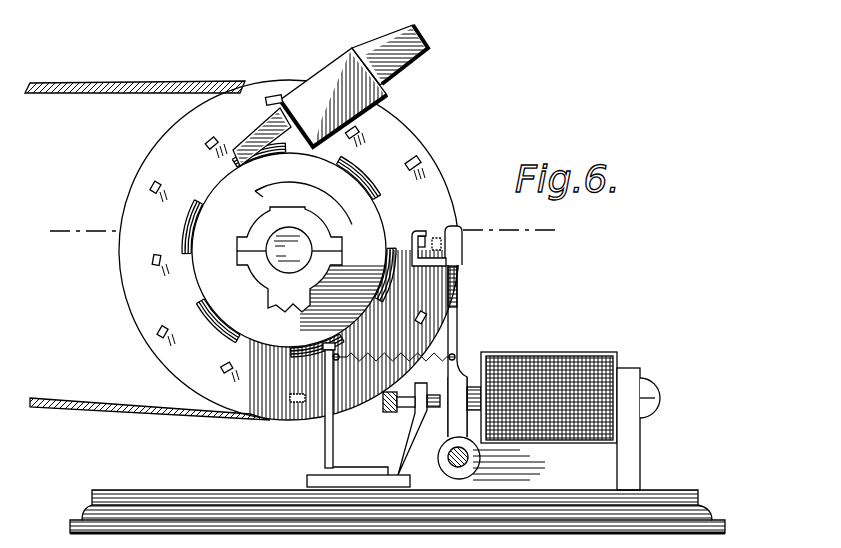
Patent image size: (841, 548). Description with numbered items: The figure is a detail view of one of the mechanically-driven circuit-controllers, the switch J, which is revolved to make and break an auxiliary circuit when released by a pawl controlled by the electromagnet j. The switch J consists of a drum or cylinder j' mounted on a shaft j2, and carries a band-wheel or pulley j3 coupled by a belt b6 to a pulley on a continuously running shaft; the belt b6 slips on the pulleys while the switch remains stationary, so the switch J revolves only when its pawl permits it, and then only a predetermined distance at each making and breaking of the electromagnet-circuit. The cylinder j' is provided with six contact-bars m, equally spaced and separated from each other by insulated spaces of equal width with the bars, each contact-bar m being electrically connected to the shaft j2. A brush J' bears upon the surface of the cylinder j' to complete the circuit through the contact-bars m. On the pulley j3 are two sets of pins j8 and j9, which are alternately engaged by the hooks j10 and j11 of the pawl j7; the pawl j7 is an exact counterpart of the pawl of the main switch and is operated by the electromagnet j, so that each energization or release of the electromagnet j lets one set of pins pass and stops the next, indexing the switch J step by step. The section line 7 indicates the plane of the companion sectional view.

The switch J is at (297, 82).
The brush J' is at (390, 49).
The belt b6 is at (147, 243).
The electromagnet j is at (563, 408).
The cylinder j' is at (289, 250).
The shaft j2 is at (289, 259).
The band-wheel j3 is at (151, 159).
The pawl j7 is at (460, 302).
The pins j8 is at (273, 96).
The pins j9 is at (488, 318).
The hook j10 is at (461, 230).
The hook j11 is at (438, 238).
The contact-bars m is at (281, 168).
The section line 7 is at (305, 233).